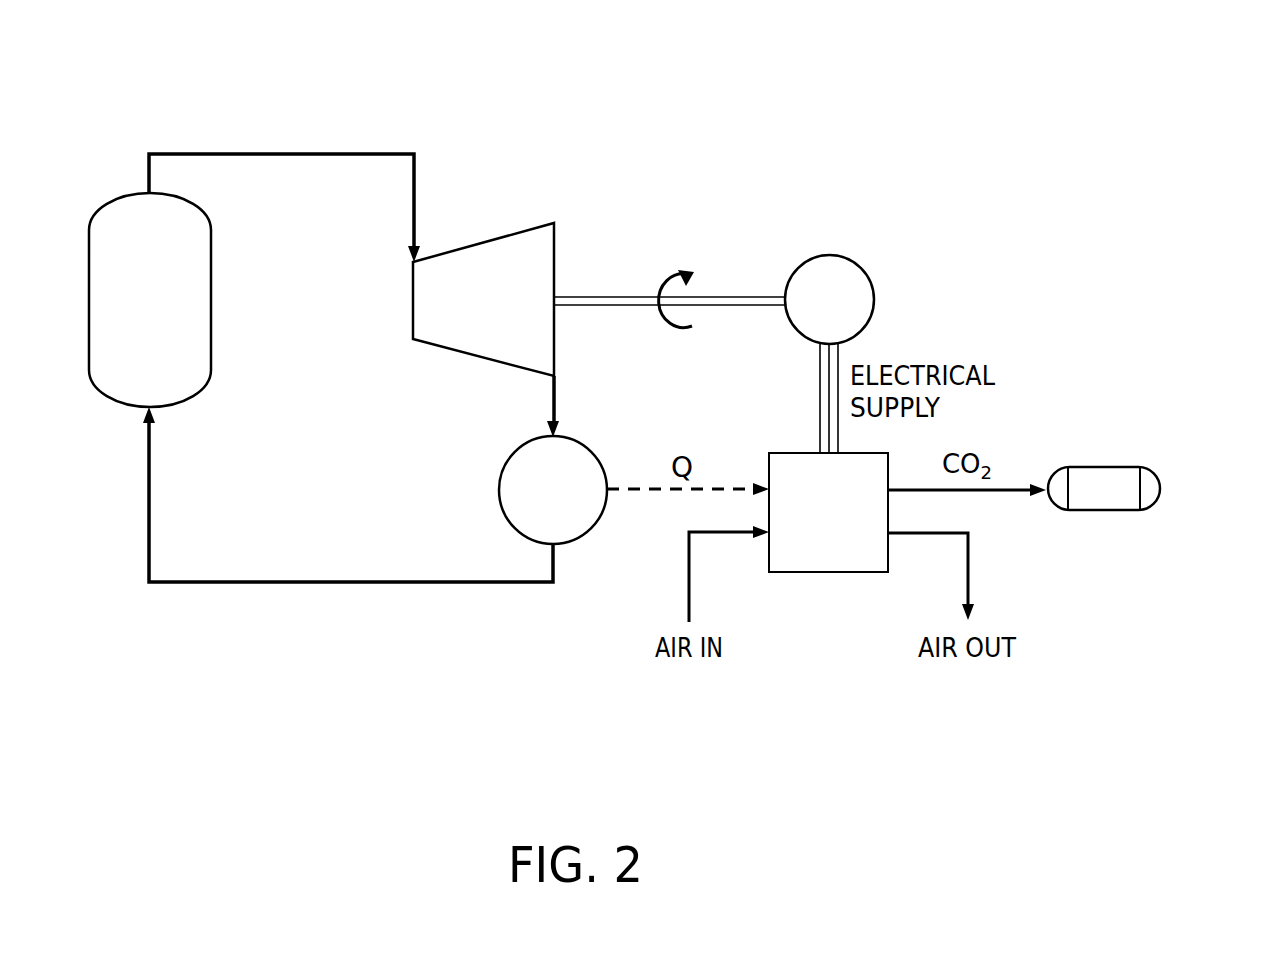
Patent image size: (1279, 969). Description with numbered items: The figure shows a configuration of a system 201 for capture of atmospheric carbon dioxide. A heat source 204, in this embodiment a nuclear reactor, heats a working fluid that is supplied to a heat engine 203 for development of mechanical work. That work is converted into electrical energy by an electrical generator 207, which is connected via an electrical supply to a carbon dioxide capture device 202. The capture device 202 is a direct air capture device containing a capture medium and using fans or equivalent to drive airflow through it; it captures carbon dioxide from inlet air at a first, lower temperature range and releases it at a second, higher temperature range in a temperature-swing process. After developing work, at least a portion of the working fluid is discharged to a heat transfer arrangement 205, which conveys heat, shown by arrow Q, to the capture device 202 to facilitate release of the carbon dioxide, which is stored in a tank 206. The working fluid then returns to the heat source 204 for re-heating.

The system 201 is at (915, 86).
The carbon dioxide capture device 202 is at (804, 527).
The heat engine 203 is at (459, 320).
The heat source 204 is at (124, 318).
The heat transfer arrangement 205 is at (529, 507).
The tank 206 is at (1162, 491).
The electrical generator 207 is at (850, 267).